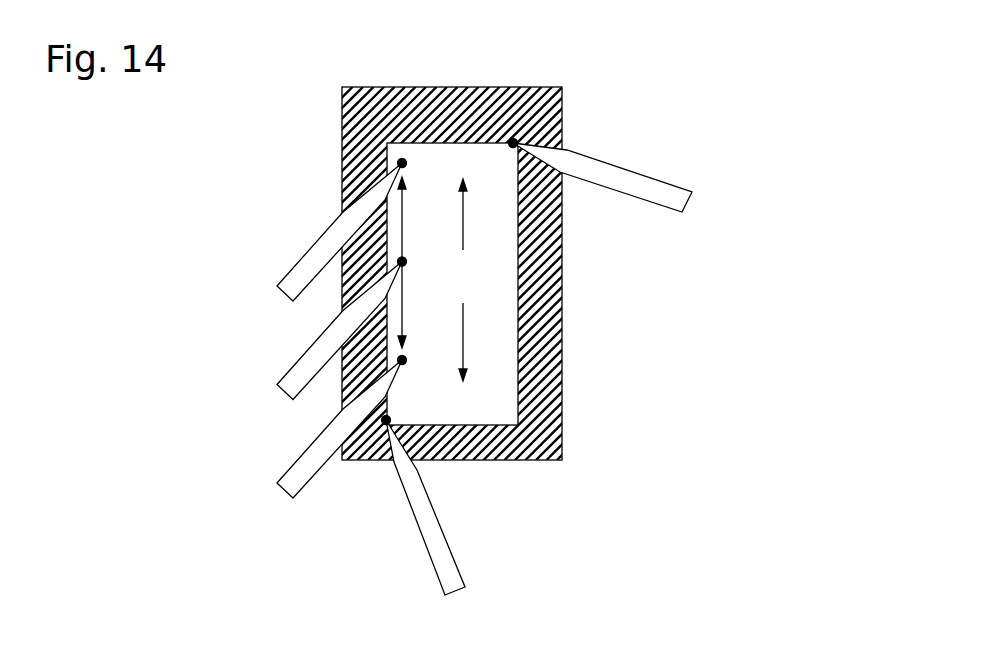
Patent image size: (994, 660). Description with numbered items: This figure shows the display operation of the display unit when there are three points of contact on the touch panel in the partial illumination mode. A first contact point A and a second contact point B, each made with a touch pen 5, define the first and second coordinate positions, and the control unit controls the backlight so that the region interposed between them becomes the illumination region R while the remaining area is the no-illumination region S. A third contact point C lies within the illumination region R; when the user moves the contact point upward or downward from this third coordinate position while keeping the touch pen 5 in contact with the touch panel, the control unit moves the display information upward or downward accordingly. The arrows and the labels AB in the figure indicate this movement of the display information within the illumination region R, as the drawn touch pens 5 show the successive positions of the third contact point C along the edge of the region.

The contact point A is at (513, 143).
The contact point B is at (386, 420).
The contact point C is at (402, 262).
The illumination region R is at (510, 337).
The no-illumination region S is at (532, 460).
The touch pen 5 is at (648, 196).
The direction of movement AB is at (467, 283).